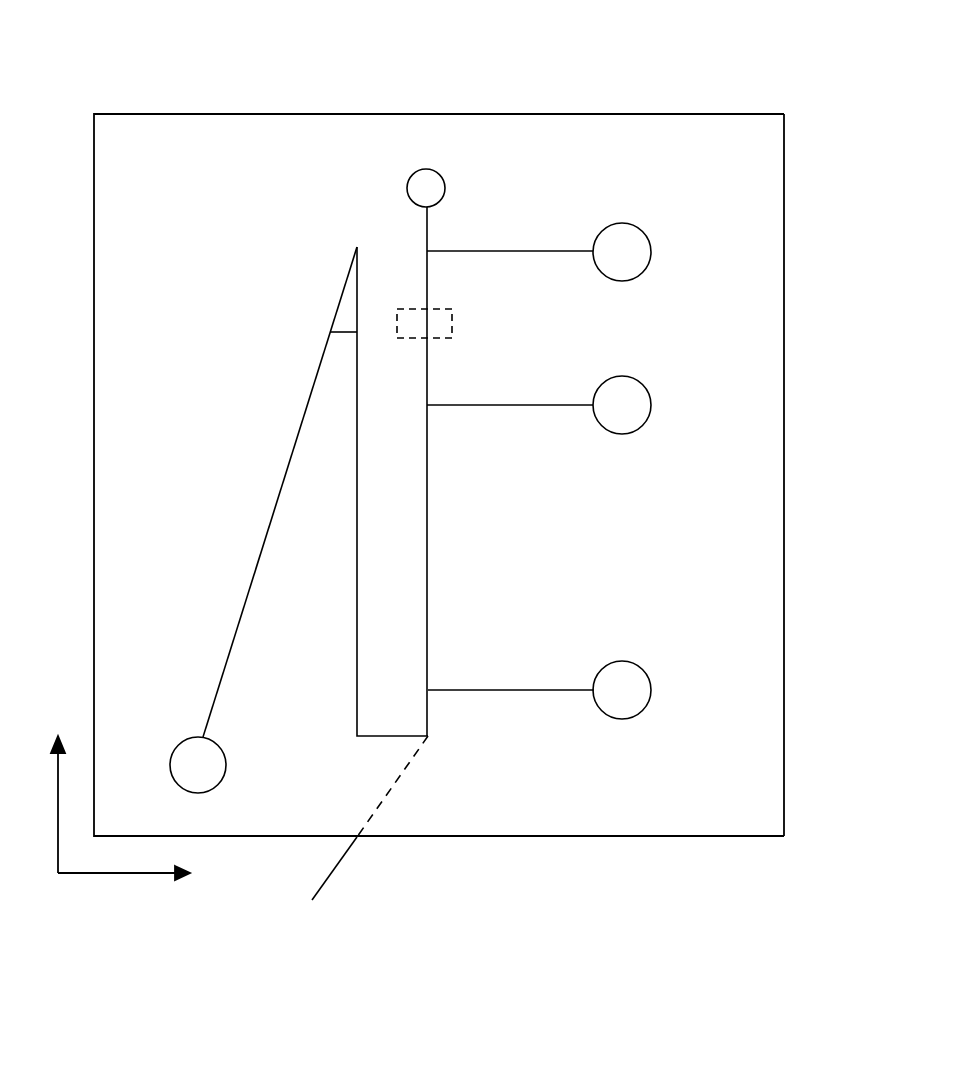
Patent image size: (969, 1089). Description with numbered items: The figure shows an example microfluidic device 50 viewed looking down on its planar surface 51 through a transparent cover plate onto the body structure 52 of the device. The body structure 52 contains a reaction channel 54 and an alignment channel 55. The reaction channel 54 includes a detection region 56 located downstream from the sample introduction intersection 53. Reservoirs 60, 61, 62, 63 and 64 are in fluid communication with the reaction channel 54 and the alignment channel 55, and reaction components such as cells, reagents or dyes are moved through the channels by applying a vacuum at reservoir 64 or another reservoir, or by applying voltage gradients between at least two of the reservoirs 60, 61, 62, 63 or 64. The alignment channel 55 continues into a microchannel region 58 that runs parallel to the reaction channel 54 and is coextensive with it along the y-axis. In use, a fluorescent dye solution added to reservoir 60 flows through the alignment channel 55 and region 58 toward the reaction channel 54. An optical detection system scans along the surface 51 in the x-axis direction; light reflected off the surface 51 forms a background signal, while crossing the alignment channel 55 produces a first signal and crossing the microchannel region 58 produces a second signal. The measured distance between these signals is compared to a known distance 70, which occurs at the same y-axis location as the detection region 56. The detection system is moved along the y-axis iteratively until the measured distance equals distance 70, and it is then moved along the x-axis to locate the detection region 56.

The microfluidic device 50 is at (114, 82).
The planar surface 51 is at (377, 127).
The body structure 52 is at (784, 260).
The sample introduction intersection 53 is at (428, 738).
The reaction channel 54 is at (428, 568).
The alignment channel 55 is at (272, 508).
The detection region 56 is at (455, 310).
The microchannel region 58 is at (355, 578).
The reservoir 60 is at (190, 768).
The reservoir 61 is at (632, 240).
The reservoir 62 is at (618, 398).
The reservoir 63 is at (624, 680).
The reservoir 64 is at (440, 188).
The known distance 70 is at (340, 322).